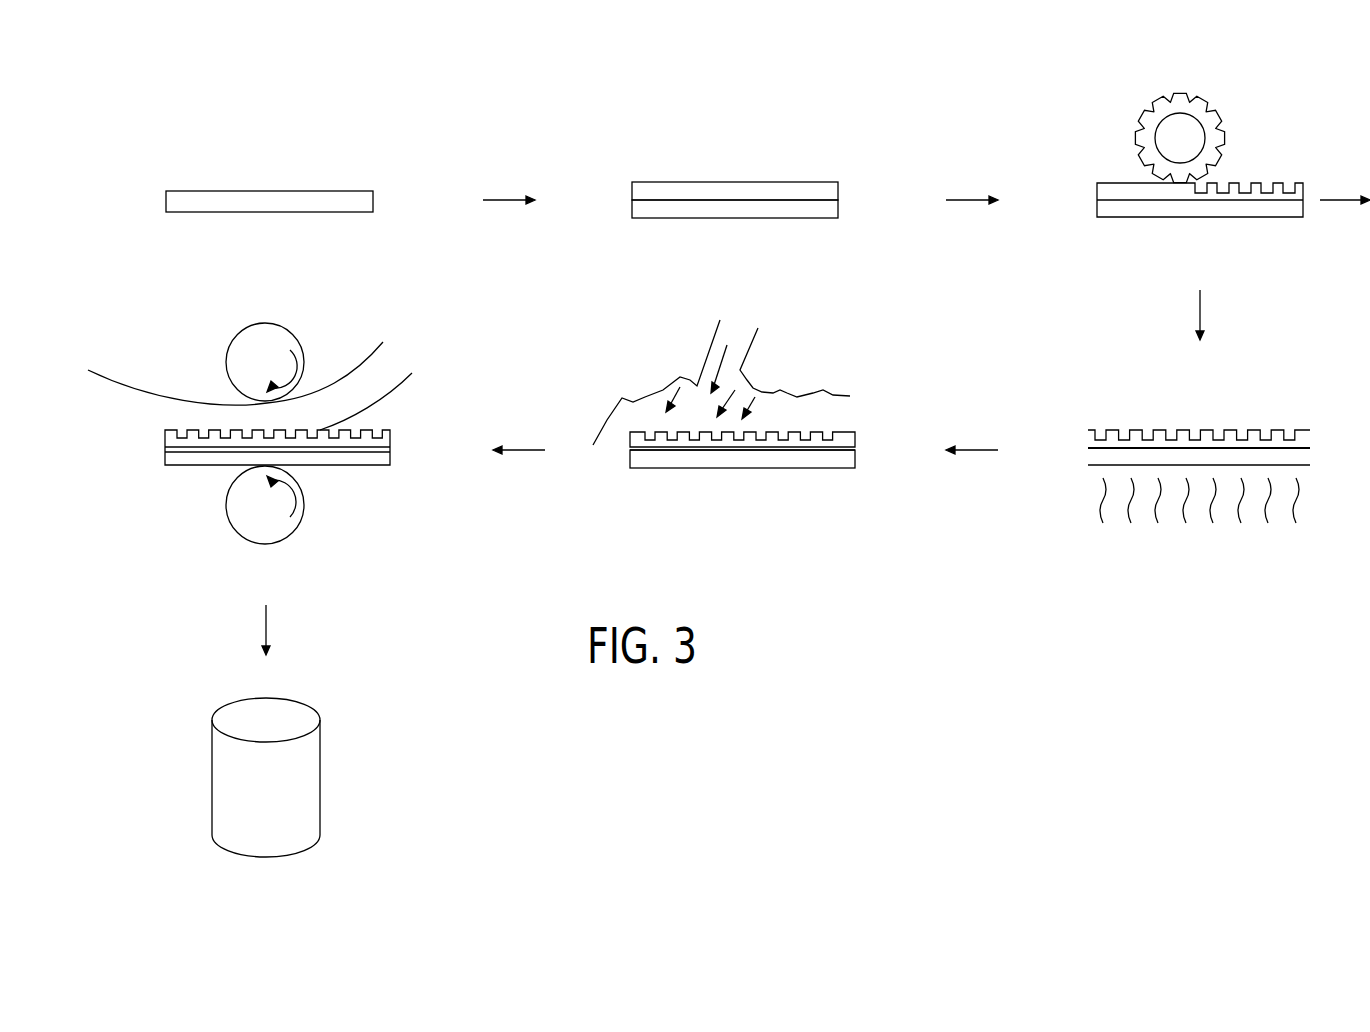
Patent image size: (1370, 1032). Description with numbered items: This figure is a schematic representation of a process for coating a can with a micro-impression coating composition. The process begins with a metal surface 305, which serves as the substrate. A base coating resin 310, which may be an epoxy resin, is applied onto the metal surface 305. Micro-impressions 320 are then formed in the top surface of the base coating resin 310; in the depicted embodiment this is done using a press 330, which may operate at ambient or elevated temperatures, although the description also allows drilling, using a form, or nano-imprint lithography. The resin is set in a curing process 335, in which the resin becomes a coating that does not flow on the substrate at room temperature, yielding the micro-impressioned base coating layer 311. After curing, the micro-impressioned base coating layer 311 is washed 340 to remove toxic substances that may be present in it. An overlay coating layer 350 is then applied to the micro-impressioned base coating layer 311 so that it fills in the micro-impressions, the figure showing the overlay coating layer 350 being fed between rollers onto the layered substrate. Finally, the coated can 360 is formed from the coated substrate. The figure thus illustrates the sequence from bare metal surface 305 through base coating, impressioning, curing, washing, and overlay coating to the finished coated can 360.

The metal surface 305 is at (263, 203).
The base coating resin 310 is at (730, 192).
The micro-impressions 320 is at (1245, 187).
The press 330 is at (1187, 96).
The curing process 335 is at (1253, 525).
The washing 340 is at (738, 330).
The micro-impressioned base coating layer 311 is at (762, 442).
The overlay coating layer 350 is at (186, 418).
The coated can 360 is at (297, 780).